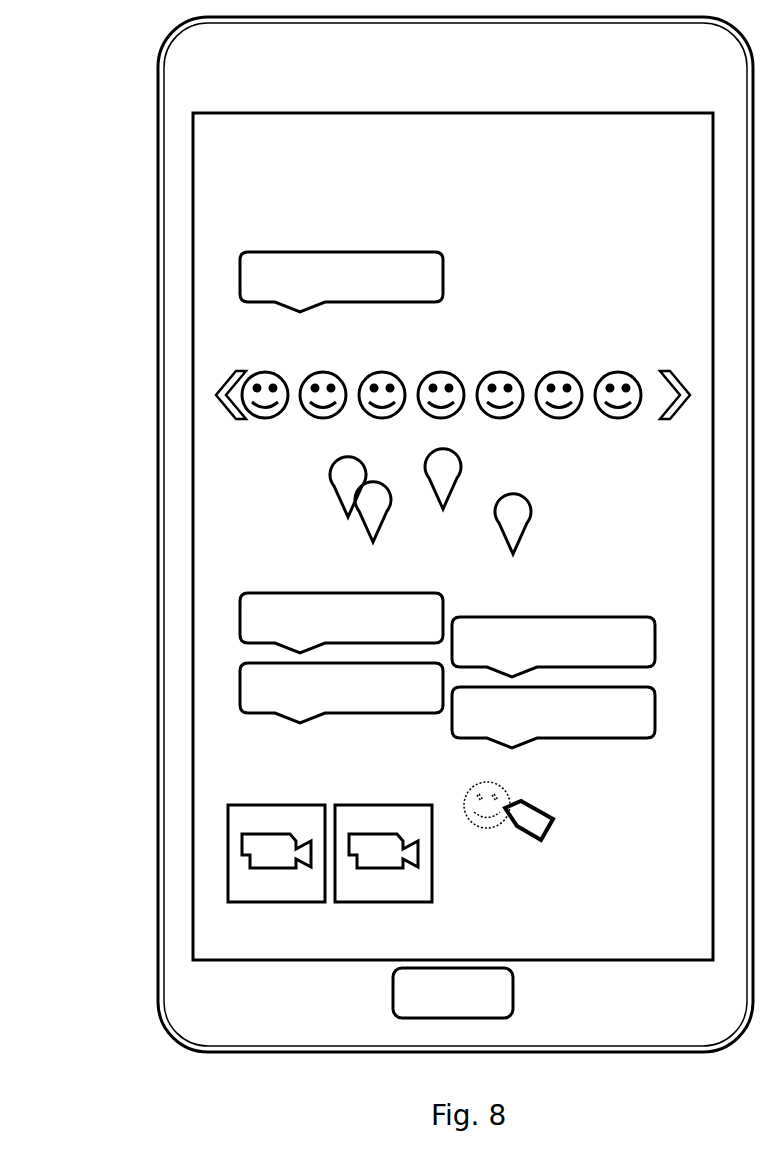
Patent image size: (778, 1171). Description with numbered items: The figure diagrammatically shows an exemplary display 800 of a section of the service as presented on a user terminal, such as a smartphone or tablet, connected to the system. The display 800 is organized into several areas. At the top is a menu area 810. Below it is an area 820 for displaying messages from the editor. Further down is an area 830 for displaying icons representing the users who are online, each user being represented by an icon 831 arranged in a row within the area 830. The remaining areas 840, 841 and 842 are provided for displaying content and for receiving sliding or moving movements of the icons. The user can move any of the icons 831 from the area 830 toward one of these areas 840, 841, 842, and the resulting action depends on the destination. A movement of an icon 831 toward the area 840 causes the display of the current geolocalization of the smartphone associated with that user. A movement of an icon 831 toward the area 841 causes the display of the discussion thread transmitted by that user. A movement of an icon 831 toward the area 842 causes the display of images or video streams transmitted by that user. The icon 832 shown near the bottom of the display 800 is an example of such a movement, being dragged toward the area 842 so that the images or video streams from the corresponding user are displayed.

The display 800 is at (383, 528).
The menu area 810 is at (301, 131).
The area for displaying messages from the editor 820 is at (237, 265).
The area for displaying icons representing online users 830 is at (361, 352).
The icon 831 is at (513, 352).
The icon 832 is at (563, 840).
The area for displaying and receiving sliding/moving movements 840 is at (281, 501).
The area for displaying and receiving sliding/moving movements 841 is at (343, 658).
The area for displaying and receiving sliding/moving movements 842 is at (232, 836).